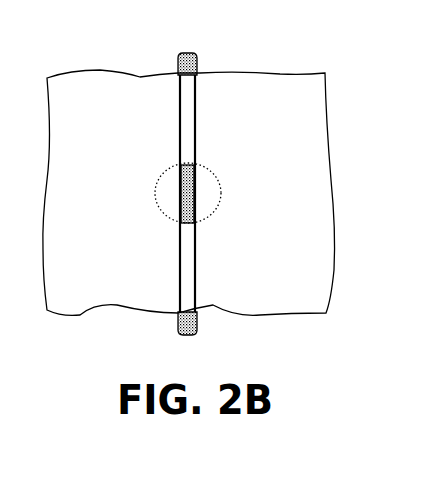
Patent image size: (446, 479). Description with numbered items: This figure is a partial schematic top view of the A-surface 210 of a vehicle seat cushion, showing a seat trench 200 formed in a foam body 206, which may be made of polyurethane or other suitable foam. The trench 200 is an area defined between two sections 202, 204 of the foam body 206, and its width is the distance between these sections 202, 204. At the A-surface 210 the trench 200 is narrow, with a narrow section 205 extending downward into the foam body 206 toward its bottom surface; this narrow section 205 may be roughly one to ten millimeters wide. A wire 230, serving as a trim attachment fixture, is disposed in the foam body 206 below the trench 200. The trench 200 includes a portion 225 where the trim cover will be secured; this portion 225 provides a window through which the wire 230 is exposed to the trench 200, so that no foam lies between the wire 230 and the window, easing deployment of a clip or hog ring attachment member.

The seat trench 200 is at (205, 125).
The section of foam body 202 is at (125, 228).
The section of foam body 204 is at (285, 241).
The narrow section 205 is at (178, 142).
The foam body 206 is at (203, 93).
The A-surface 210 is at (127, 102).
The portion of trench 225 is at (215, 208).
The wire 230 is at (192, 198).